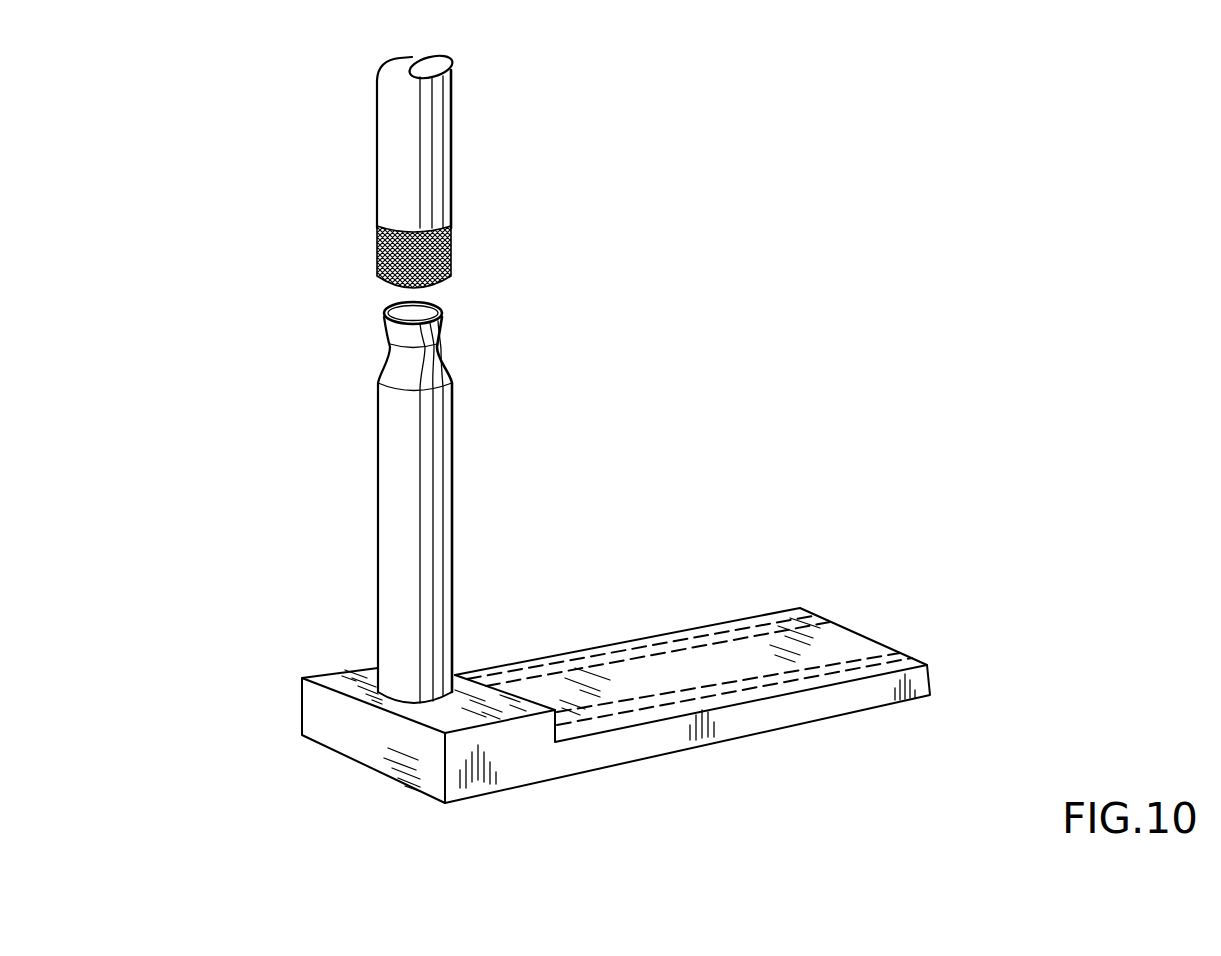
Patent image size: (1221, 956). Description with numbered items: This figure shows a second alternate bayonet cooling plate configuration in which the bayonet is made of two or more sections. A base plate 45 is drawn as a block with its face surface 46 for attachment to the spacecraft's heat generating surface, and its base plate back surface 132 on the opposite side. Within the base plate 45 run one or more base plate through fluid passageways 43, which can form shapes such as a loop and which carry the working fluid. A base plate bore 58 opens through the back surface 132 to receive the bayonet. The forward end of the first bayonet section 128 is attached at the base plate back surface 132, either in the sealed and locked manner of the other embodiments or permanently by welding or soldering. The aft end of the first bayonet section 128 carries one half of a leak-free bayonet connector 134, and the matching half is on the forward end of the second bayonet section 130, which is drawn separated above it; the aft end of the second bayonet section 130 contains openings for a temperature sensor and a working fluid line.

The second bayonet section 130 is at (454, 150).
The leak-free bayonet connector 134 is at (453, 250).
The first bayonet section 128 is at (454, 497).
The base plate back surface 132 is at (498, 710).
The base plate through fluid passageways 43 is at (808, 615).
The base plate 45 is at (845, 703).
The face surface 46 is at (645, 762).
The base plate bore 58 is at (412, 705).